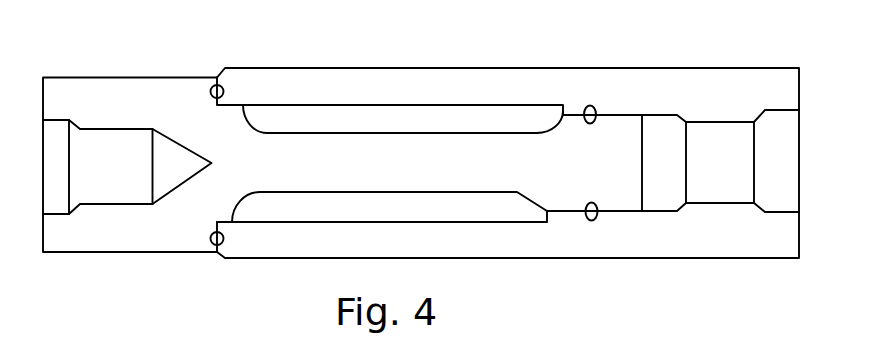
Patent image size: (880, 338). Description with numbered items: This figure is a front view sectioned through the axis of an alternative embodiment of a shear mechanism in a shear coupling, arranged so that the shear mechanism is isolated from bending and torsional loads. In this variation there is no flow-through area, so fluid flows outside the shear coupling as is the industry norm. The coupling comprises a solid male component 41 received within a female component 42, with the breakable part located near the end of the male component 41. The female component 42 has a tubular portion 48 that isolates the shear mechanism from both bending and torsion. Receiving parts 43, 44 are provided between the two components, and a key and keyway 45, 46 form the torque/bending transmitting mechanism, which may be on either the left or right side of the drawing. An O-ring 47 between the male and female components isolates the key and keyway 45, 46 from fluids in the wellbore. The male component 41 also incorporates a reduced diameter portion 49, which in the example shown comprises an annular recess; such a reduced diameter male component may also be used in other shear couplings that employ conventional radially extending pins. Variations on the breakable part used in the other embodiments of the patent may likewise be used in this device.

The solid male component 41 is at (123, 150).
The female component 42 is at (580, 90).
The receiving part 43 is at (591, 203).
The receiving part 44 is at (592, 221).
The key 45 is at (622, 114).
The keyway 46 is at (655, 211).
The O-ring 47 is at (222, 70).
The tubular portion 48 is at (373, 115).
The reduced diameter portion 49 is at (327, 177).